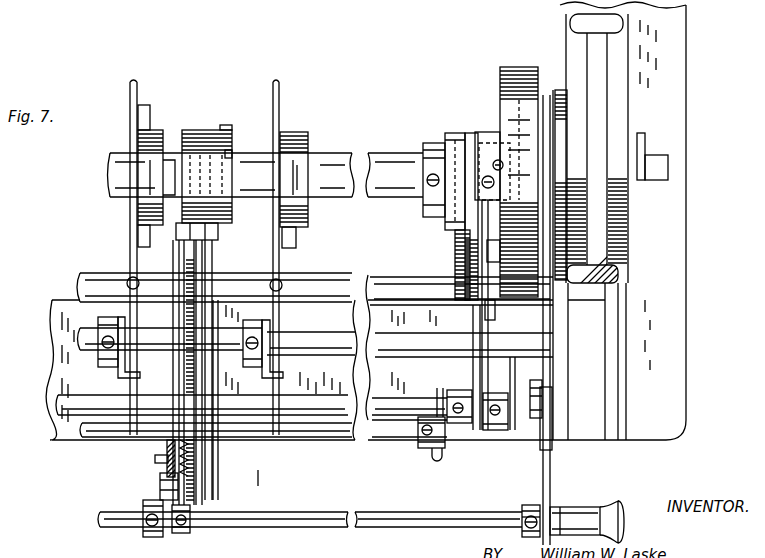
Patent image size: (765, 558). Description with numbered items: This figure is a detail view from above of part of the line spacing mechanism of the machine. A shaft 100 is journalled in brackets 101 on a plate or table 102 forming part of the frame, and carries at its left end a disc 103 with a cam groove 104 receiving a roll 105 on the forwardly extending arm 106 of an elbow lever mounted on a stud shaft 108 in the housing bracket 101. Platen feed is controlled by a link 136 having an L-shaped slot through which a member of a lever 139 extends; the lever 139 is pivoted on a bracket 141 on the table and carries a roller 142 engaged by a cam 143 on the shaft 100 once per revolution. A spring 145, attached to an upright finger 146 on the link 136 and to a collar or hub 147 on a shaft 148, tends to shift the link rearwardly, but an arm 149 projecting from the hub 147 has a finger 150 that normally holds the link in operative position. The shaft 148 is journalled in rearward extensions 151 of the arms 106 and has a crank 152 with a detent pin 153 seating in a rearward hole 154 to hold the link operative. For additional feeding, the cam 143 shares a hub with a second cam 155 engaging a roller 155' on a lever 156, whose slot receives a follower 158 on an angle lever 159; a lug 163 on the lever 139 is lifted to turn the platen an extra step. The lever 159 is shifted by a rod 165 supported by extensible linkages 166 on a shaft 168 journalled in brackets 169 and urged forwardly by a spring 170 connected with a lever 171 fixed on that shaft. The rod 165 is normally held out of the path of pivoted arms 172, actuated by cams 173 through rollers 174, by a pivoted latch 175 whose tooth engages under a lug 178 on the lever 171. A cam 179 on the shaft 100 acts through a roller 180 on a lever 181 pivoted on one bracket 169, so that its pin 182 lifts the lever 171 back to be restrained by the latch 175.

The shaft 100 is at (342, 147).
The bracket 101 is at (605, 342).
The plate or table 102 is at (670, 275).
The disc 103 is at (537, 51).
The cam groove 104 is at (520, 108).
The roll 105 is at (556, 100).
The forwardly extending arm 106 is at (551, 322).
The stud shaft 108 is at (540, 427).
The link 136 is at (167, 445).
The lever 139 is at (158, 462).
The bracket 141 is at (230, 372).
The roller 142 is at (190, 157).
The cam 143 is at (182, 138).
The spring 145 is at (196, 473).
The upright finger 146 is at (173, 268).
The collar or hub 147 is at (185, 528).
The shaft 148 is at (315, 512).
The arm 149 is at (165, 487).
The lateral projection or finger 150 is at (143, 527).
The rearward extension 151 is at (551, 473).
The crank 152 is at (565, 503).
The detent pin 153 is at (530, 525).
The rearward hole 154 is at (532, 508).
The second cam 155 is at (243, 119).
The roller 155' is at (247, 144).
The lever 156 is at (219, 238).
The projection or follower 158 is at (213, 492).
The angle lever 159 is at (277, 476).
The lug 163 is at (168, 433).
The rod 165 is at (323, 438).
The extensible linkage 166 is at (435, 450).
The shaft 168 is at (395, 418).
The bracket 169 is at (470, 373).
The spring 170 is at (490, 128).
The lever 171 is at (483, 132).
The pivoted arm 172 is at (130, 238).
The cam 173 is at (140, 232).
The roller or follower 174 is at (145, 169).
The pivoted latch 175 is at (490, 312).
The laterally extending lug 178 is at (475, 250).
The cam 179 is at (440, 200).
The roller 180 is at (455, 130).
The lever 181 is at (463, 258).
The pin 182 is at (548, 385).